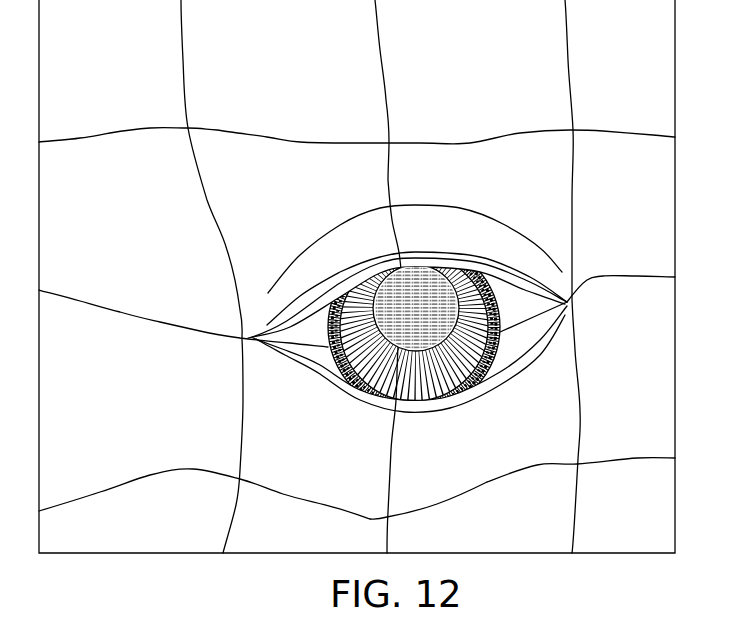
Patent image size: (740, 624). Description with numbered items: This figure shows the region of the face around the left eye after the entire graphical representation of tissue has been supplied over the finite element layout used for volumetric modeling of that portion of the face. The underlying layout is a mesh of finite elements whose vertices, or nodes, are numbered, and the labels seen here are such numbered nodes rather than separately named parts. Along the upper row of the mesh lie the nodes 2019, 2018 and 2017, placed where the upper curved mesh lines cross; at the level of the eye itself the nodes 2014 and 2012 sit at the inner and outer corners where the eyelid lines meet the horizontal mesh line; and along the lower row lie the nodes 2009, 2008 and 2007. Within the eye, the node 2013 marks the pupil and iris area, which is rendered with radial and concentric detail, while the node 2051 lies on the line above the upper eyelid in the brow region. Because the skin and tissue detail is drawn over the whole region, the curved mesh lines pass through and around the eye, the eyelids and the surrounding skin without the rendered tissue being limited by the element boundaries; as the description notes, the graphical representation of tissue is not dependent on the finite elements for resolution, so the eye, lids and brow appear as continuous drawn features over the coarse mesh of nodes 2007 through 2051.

The lower horizontal mesh line right segment 2007 is at (581, 459).
The lower horizontal mesh line middle segment 2008 is at (428, 512).
The lower horizontal mesh line left segment 2009 is at (204, 488).
The outer eye corner mesh line 2012 is at (587, 304).
The pupil of eye 2013 is at (414, 325).
The inner eye corner mesh line 2014 is at (183, 328).
The right vertical mesh line 2017 is at (597, 276).
The center vertical mesh line 2018 is at (410, 276).
The left vertical mesh line 2019 is at (212, 276).
The eyebrow line 2051 is at (415, 249).